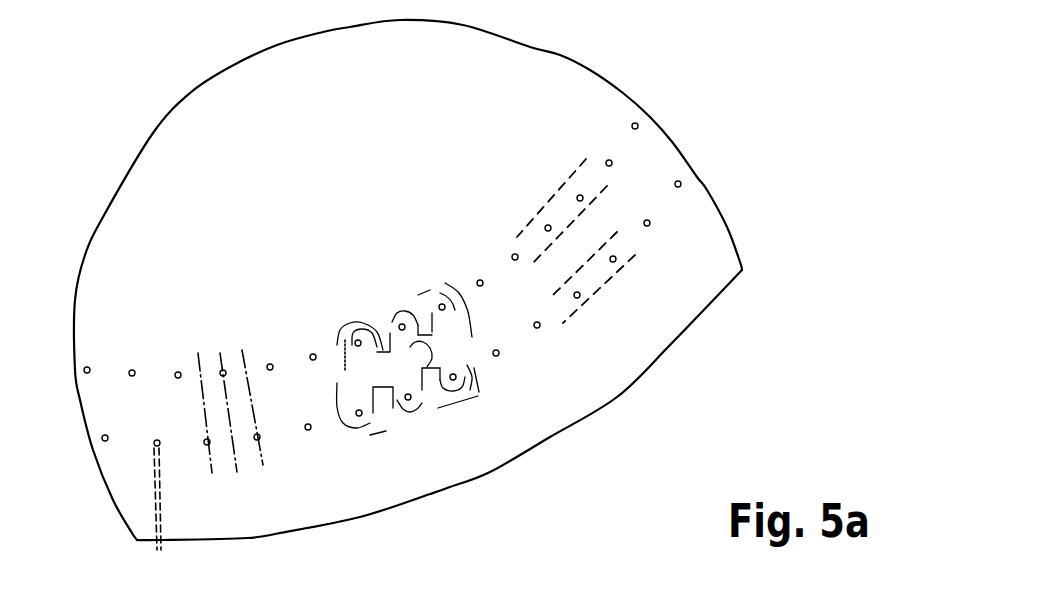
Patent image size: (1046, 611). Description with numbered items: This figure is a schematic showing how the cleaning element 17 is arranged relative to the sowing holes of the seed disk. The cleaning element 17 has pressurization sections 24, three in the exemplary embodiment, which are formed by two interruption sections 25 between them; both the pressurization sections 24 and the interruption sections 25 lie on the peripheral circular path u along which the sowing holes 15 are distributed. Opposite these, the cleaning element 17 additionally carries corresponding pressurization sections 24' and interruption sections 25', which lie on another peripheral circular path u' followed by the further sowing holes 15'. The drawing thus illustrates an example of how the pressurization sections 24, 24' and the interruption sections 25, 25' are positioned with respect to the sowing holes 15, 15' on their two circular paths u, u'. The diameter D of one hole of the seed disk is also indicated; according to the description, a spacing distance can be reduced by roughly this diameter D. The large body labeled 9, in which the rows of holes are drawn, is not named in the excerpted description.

The shell segment 9 is at (407, 168).
The sowing holes 15 is at (733, 165).
The sowing holes 15' is at (700, 96).
The cleaning element 17 is at (363, 432).
The pressurization sections 24 is at (481, 466).
The pressurization sections 24' is at (257, 227).
The interruption sections 25 is at (421, 458).
The interruption sections 25' is at (201, 282).
The peripheral circular path u is at (650, 307).
The peripheral circular path u' is at (587, 131).
The diameter of one hole D is at (158, 550).